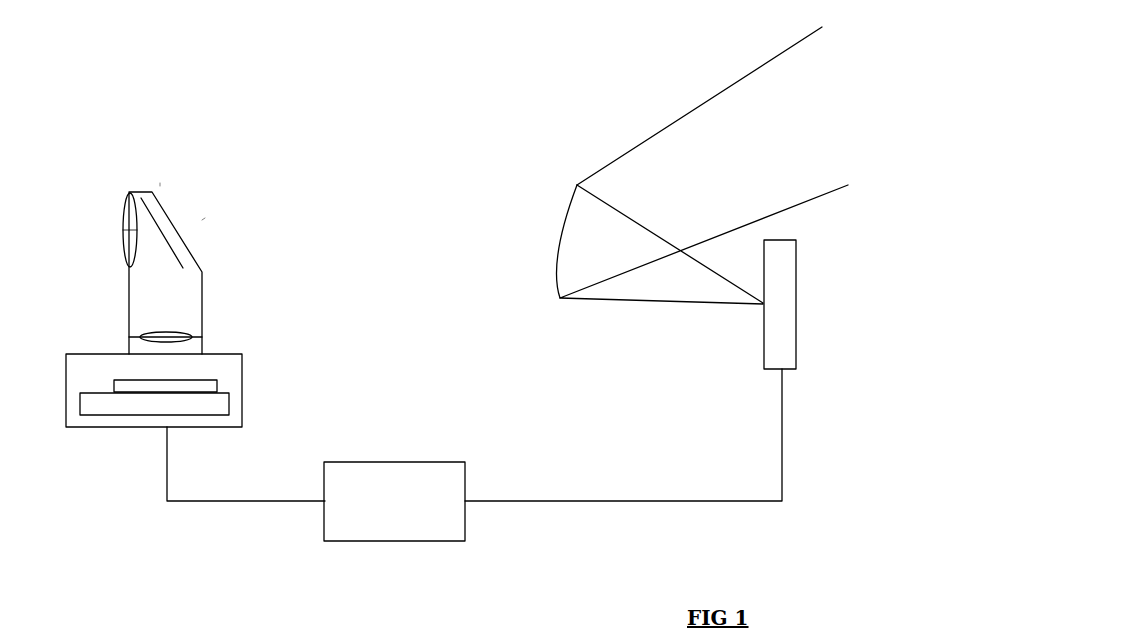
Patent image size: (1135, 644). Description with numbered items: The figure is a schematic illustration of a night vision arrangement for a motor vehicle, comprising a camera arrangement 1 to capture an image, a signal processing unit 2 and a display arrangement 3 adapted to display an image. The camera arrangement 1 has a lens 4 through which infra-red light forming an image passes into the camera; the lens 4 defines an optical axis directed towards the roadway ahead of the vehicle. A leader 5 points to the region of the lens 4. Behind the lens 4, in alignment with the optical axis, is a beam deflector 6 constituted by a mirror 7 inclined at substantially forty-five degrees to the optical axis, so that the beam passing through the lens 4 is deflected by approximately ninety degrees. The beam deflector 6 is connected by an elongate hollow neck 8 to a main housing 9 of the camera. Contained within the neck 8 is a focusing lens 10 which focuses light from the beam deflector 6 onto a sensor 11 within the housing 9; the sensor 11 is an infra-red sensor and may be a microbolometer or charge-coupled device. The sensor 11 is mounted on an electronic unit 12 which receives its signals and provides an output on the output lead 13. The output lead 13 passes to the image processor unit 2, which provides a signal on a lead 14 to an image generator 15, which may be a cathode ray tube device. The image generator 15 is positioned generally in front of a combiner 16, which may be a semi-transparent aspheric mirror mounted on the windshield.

The camera arrangement 1 is at (205, 218).
The signal processing unit 2 is at (385, 477).
The display arrangement 3 is at (692, 93).
The lens 4 is at (125, 197).
The optical element 5 is at (122, 230).
The beam deflector 6 is at (160, 183).
The mirror 7 is at (172, 208).
The elongate hollow neck 8 is at (180, 290).
The main housing 9 is at (242, 364).
The focusing lens 10 is at (170, 336).
The sensor 11 is at (217, 383).
The electronic unit 12 is at (196, 406).
The output lead 13 is at (276, 503).
The lead 14 is at (562, 502).
The image generator 15 is at (786, 315).
The combiner 16 is at (602, 250).